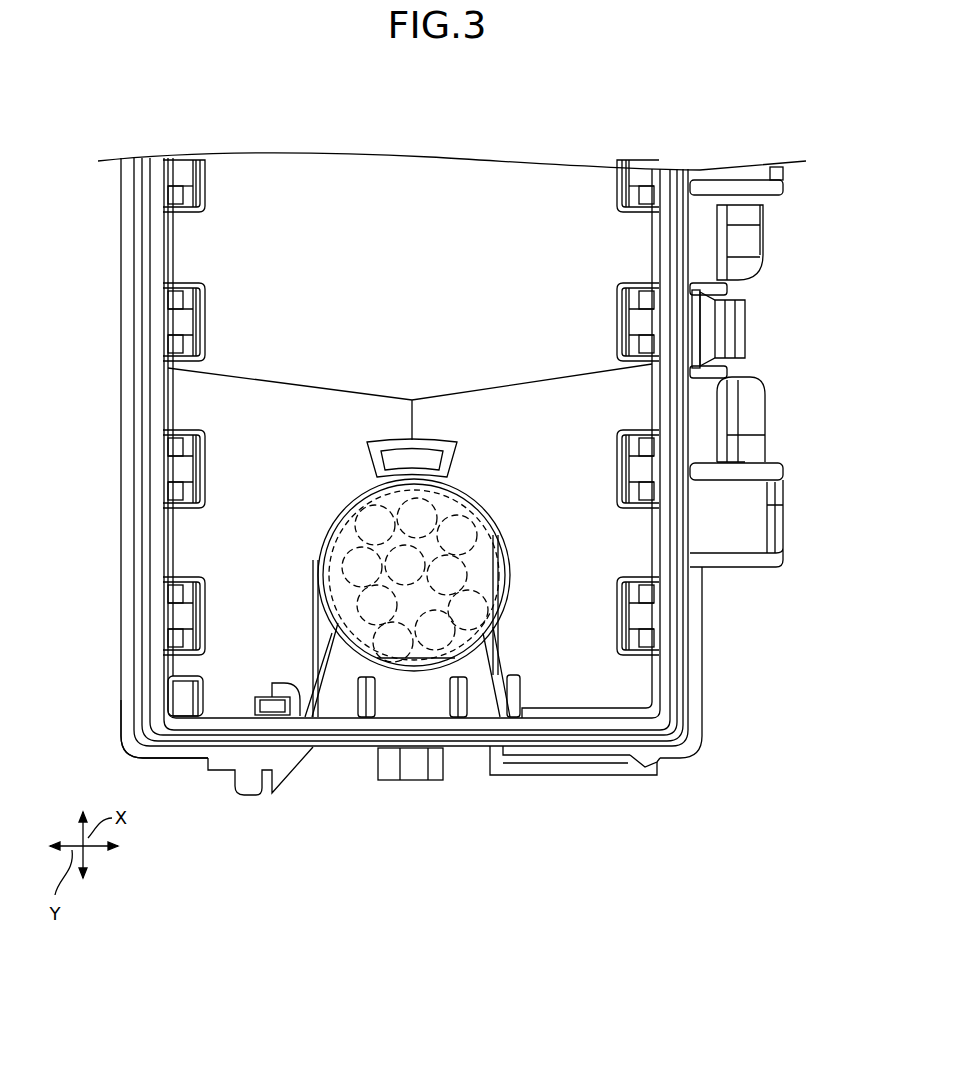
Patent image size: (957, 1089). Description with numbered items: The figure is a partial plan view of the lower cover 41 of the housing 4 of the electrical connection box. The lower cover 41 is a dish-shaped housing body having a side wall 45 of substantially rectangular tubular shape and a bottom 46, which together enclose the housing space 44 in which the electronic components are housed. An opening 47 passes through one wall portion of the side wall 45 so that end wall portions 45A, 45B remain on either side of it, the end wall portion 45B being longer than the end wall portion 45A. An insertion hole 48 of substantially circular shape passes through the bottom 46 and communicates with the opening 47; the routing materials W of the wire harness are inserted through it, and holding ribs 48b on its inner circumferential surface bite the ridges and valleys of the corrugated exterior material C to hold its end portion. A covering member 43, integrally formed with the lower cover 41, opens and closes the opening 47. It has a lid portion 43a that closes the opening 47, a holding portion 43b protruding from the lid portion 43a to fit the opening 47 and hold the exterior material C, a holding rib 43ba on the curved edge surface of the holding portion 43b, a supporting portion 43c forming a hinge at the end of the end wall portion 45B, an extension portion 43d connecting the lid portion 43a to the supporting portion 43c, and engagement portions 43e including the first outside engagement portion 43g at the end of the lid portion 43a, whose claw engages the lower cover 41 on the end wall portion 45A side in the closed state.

The housing 4 is at (452, 486).
The lower cover 41 is at (305, 182).
The covering member 43 is at (411, 526).
The lid portion 43a is at (400, 750).
The holding portion 43b is at (511, 652).
The holding rib 43ba is at (412, 664).
The supporting portion 43c is at (662, 777).
The extension portion 43d is at (563, 780).
The engagement portions 43e is at (258, 820).
The first outside engagement portion 43g is at (224, 786).
The housing space 44 is at (545, 244).
The side wall 45 is at (701, 695).
The end wall portion 45A is at (172, 760).
The end wall portion 45B is at (611, 766).
The bottom 46 is at (630, 408).
The opening 47 is at (306, 740).
The insertion hole 48 is at (323, 578).
The holding ribs 48b is at (327, 633).
The exterior material C is at (483, 516).
The routing materials W is at (325, 570).